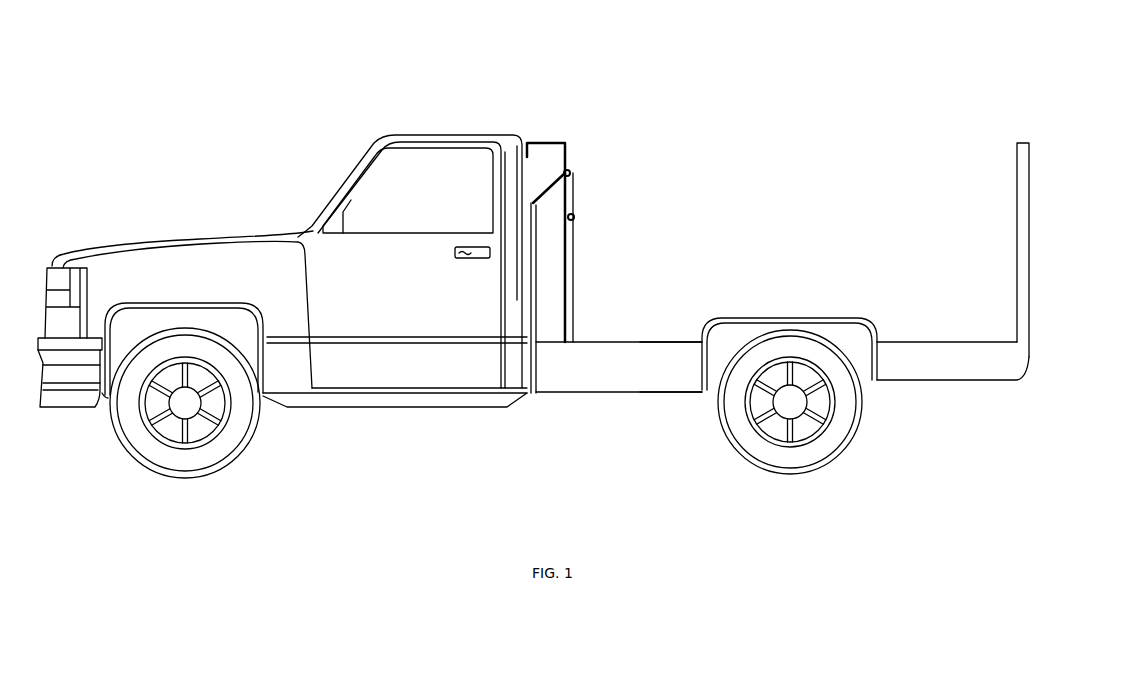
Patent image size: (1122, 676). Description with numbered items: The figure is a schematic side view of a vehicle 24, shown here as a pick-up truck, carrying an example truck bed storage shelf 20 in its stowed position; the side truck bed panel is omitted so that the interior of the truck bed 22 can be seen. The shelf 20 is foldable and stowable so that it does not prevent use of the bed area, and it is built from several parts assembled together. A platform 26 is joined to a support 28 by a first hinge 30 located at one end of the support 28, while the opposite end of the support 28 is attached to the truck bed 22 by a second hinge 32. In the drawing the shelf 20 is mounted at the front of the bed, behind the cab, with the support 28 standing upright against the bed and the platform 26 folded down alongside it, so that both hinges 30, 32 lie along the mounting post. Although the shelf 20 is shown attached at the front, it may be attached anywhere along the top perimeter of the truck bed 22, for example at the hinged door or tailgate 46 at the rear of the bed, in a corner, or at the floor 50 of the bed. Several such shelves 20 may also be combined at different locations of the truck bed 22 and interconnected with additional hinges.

The vehicle 24 is at (905, 38).
The truck bed storage shelf 20 is at (582, 270).
The truck bed 22 is at (585, 342).
The platform 26 is at (575, 305).
The support 28 is at (574, 190).
The first hinge 30 is at (574, 217).
The second hinge 32 is at (570, 173).
The tailgate 46 is at (1030, 269).
The floor 50 is at (675, 342).